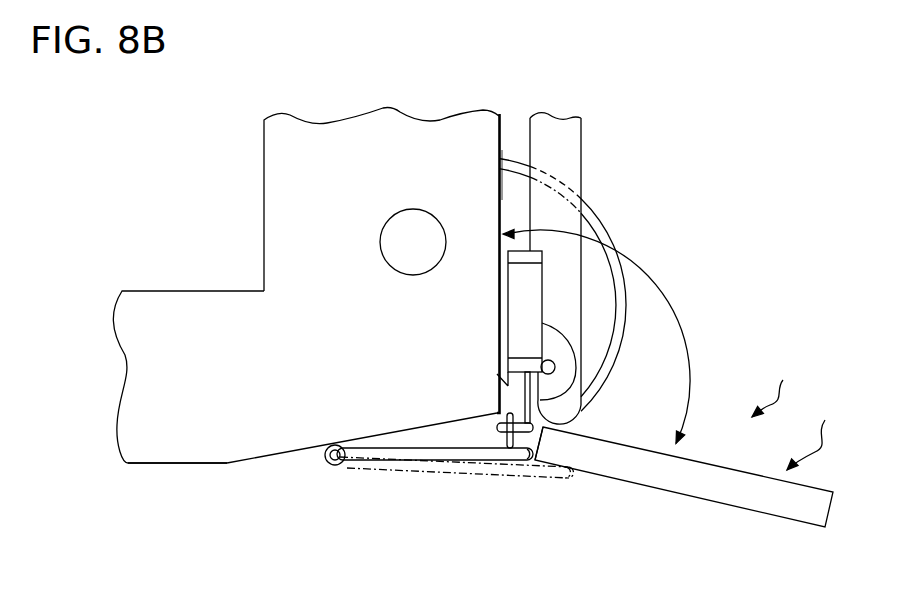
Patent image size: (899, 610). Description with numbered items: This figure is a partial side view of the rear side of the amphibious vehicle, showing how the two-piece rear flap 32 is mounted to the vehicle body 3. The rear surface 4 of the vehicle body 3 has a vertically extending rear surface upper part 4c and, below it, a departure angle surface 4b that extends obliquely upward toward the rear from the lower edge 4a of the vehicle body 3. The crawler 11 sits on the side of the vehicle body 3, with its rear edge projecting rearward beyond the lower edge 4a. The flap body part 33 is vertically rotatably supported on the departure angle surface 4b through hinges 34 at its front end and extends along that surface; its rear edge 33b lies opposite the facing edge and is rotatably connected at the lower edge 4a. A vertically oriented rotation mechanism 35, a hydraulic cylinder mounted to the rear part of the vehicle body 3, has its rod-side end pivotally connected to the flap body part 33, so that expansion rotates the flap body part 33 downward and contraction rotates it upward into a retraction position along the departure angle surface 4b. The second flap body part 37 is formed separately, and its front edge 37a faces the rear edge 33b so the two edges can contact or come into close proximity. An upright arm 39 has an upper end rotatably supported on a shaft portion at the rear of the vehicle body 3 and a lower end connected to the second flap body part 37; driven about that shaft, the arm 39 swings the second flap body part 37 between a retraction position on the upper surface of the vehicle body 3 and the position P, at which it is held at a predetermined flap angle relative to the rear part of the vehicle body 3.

The vehicle body 3 is at (388, 124).
The rear surface 4 is at (502, 128).
The lower edge 4a is at (227, 463).
The departure angle surface 4b is at (397, 433).
The rear surface upper part 4c is at (502, 187).
The crawler 11 is at (603, 230).
The rear flap 32 is at (778, 382).
The flap body part 33 is at (457, 457).
The rear edge 33b is at (545, 427).
The hinge 34 is at (316, 460).
The rotation mechanism 35 is at (541, 292).
The second flap body part 37 is at (683, 475).
The front edge 37a is at (533, 467).
The arm 39 is at (582, 148).
The position P is at (812, 427).